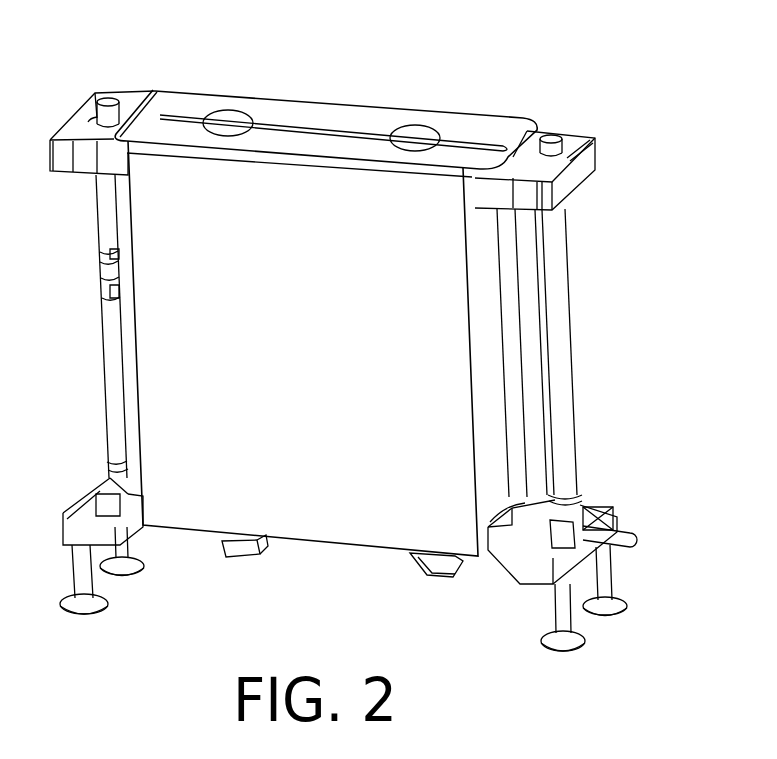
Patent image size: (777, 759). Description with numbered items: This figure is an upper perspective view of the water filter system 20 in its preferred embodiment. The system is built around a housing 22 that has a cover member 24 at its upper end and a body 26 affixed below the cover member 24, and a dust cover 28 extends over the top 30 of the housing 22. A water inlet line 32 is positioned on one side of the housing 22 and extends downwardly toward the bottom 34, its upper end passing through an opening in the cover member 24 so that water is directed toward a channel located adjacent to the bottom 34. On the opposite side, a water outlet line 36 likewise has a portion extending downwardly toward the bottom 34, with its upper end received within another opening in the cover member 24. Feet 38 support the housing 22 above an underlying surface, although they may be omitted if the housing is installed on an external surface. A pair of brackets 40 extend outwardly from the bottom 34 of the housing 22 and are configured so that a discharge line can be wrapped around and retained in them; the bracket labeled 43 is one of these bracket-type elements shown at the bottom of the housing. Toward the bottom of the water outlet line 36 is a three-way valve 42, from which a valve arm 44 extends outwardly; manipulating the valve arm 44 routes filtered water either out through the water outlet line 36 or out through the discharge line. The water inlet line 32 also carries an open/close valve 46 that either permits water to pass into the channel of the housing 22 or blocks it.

The water filter system 20 is at (628, 112).
The housing 22 is at (322, 402).
The cover member 24 is at (126, 92).
The body 26 is at (130, 348).
The dust cover 28 is at (477, 126).
The top 30 is at (402, 174).
The water inlet line 32 is at (100, 218).
The bottom 34 is at (330, 552).
The water outlet line 36 is at (562, 344).
The feet 38 is at (72, 583).
The brackets 40 is at (238, 560).
The valve 42 is at (558, 520).
The bottom clip 43 is at (441, 580).
The valve arm 44 is at (634, 539).
The valve 46 is at (102, 274).